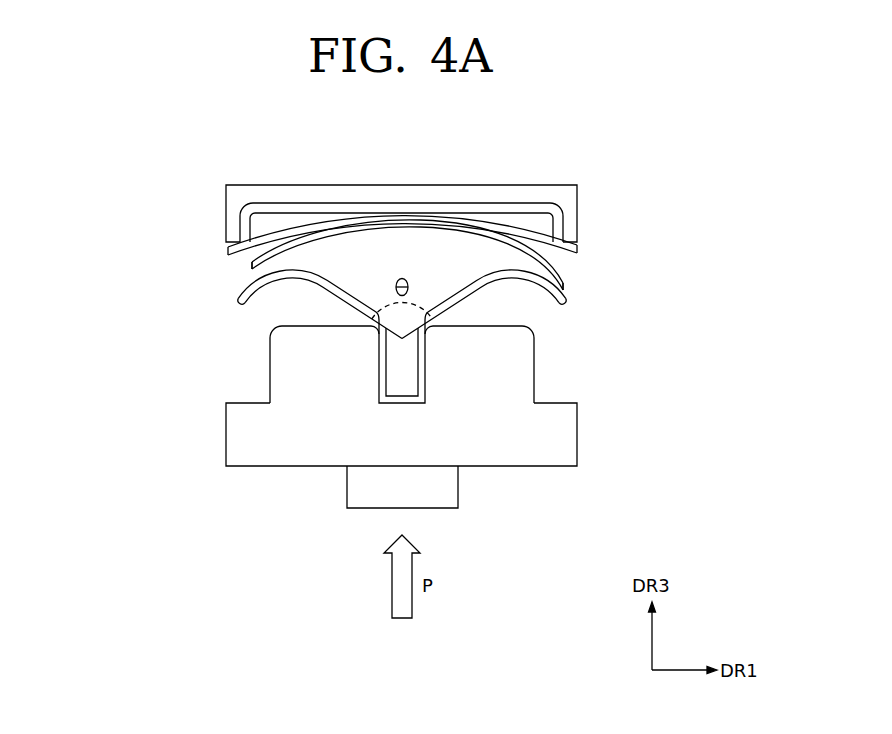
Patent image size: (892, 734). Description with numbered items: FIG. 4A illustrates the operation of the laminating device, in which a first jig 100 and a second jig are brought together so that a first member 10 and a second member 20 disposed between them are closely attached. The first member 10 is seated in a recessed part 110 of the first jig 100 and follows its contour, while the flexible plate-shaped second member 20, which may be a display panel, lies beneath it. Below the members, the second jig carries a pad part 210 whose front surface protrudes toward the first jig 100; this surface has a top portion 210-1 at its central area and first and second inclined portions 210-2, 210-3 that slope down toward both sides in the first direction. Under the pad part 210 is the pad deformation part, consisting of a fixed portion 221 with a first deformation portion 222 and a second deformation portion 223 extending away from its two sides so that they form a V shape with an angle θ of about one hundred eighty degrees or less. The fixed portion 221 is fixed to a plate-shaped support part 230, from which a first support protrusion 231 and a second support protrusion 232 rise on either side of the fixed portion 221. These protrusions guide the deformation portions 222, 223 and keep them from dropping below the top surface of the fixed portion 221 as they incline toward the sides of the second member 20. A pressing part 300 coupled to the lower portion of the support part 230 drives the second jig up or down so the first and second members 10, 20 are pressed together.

The first jig 100 is at (562, 197).
The recessed part 110 is at (247, 205).
The first member 10 is at (562, 233).
The second member 20 is at (578, 250).
The pad part 210 is at (565, 288).
The top portion 210-1 is at (402, 206).
The first inclined portion 210-2 is at (248, 265).
The second inclined portion 210-3 is at (558, 269).
The fixed portion 221 is at (407, 387).
The first deformation portion 222 is at (247, 288).
The second deformation portion 223 is at (560, 303).
The support part 230 is at (560, 443).
The first support protrusion 231 is at (262, 362).
The second support protrusion 232 is at (502, 365).
The pressing part 300 is at (447, 492).